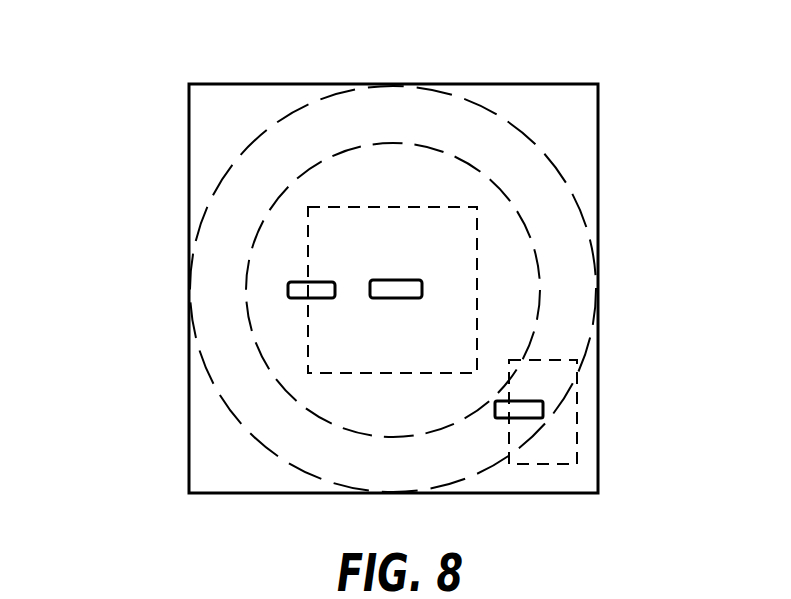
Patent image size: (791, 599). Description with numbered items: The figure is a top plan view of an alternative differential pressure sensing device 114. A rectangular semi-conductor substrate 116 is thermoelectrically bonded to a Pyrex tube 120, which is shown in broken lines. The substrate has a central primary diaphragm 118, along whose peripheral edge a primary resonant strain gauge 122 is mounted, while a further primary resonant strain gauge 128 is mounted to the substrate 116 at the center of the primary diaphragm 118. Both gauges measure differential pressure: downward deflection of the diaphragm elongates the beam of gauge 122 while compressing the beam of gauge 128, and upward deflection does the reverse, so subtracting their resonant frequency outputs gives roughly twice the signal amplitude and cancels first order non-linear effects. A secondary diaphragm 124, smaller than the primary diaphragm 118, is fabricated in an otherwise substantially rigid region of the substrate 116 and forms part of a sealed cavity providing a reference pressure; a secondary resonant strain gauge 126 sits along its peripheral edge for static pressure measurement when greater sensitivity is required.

The differential pressure sensing device 114 is at (145, 102).
The semi-conductor substrate 116 is at (553, 105).
The primary diaphragm 118 is at (386, 206).
The Pyrex tube 120 is at (573, 257).
The primary resonant strain gauge 122 is at (317, 282).
The secondary diaphragm 124 is at (558, 459).
The secondary resonant strain gauge 126 is at (498, 403).
The further primary resonant strain gauge 128 is at (397, 298).